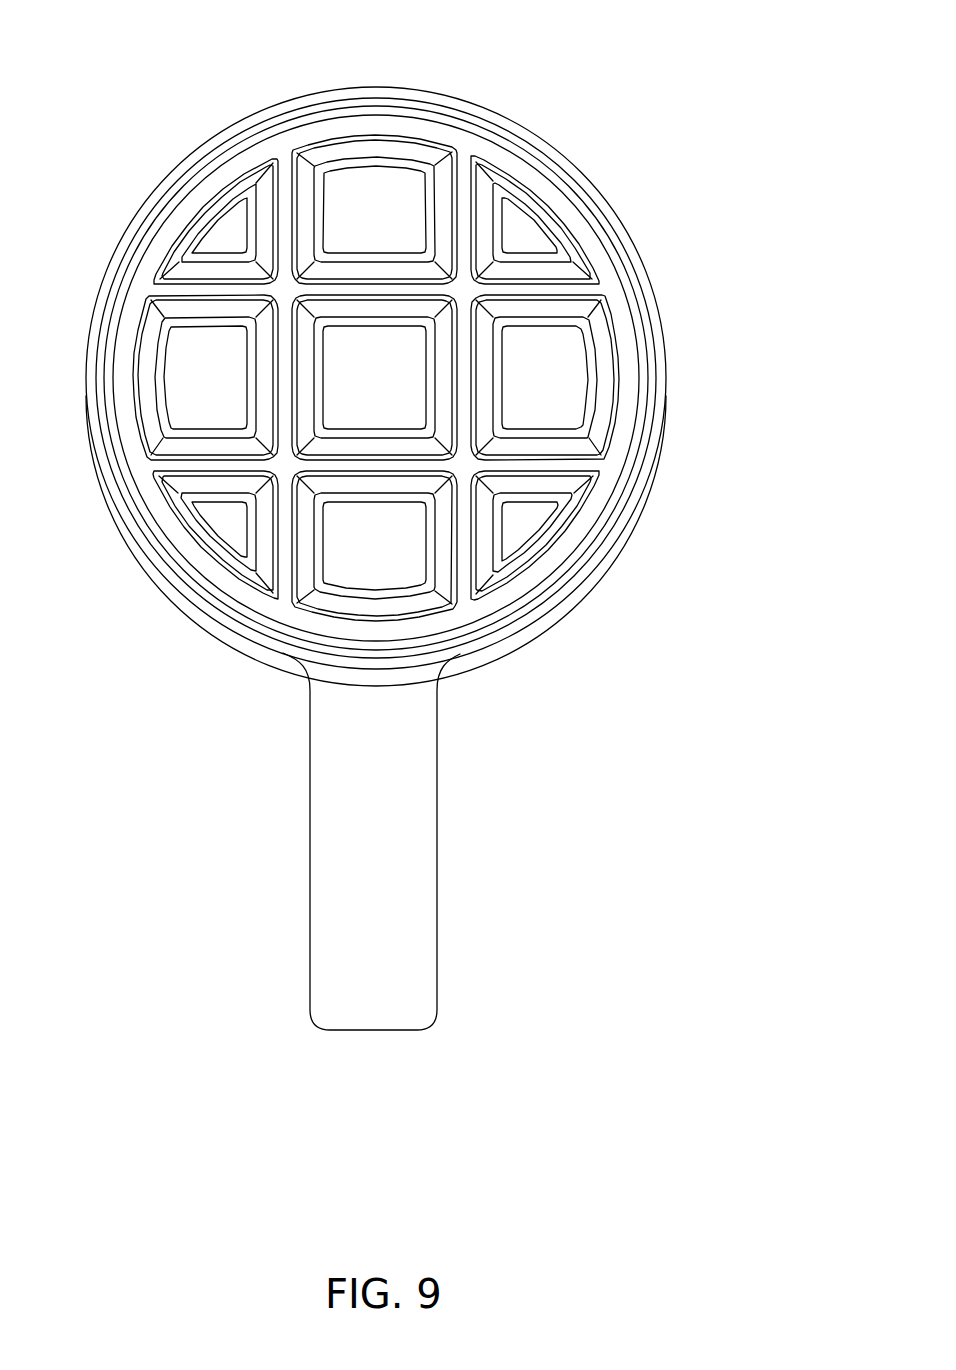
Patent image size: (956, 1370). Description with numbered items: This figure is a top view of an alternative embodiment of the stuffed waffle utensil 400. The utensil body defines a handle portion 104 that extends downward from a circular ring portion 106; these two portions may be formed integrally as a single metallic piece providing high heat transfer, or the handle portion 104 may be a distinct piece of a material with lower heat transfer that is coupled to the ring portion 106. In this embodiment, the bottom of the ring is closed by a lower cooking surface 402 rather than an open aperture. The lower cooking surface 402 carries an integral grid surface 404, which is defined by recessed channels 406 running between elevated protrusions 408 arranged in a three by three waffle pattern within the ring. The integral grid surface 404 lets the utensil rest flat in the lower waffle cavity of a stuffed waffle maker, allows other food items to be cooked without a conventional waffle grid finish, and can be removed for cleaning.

The stuffed waffle utensil 400 is at (437, 515).
The lower cooking surface 402 is at (444, 367).
The integral grid surface 404 is at (543, 353).
The recessed channels 406 is at (287, 467).
The elevated protrusions 408 is at (383, 552).
The ring portion 106 is at (162, 185).
The handle portion 104 is at (438, 962).